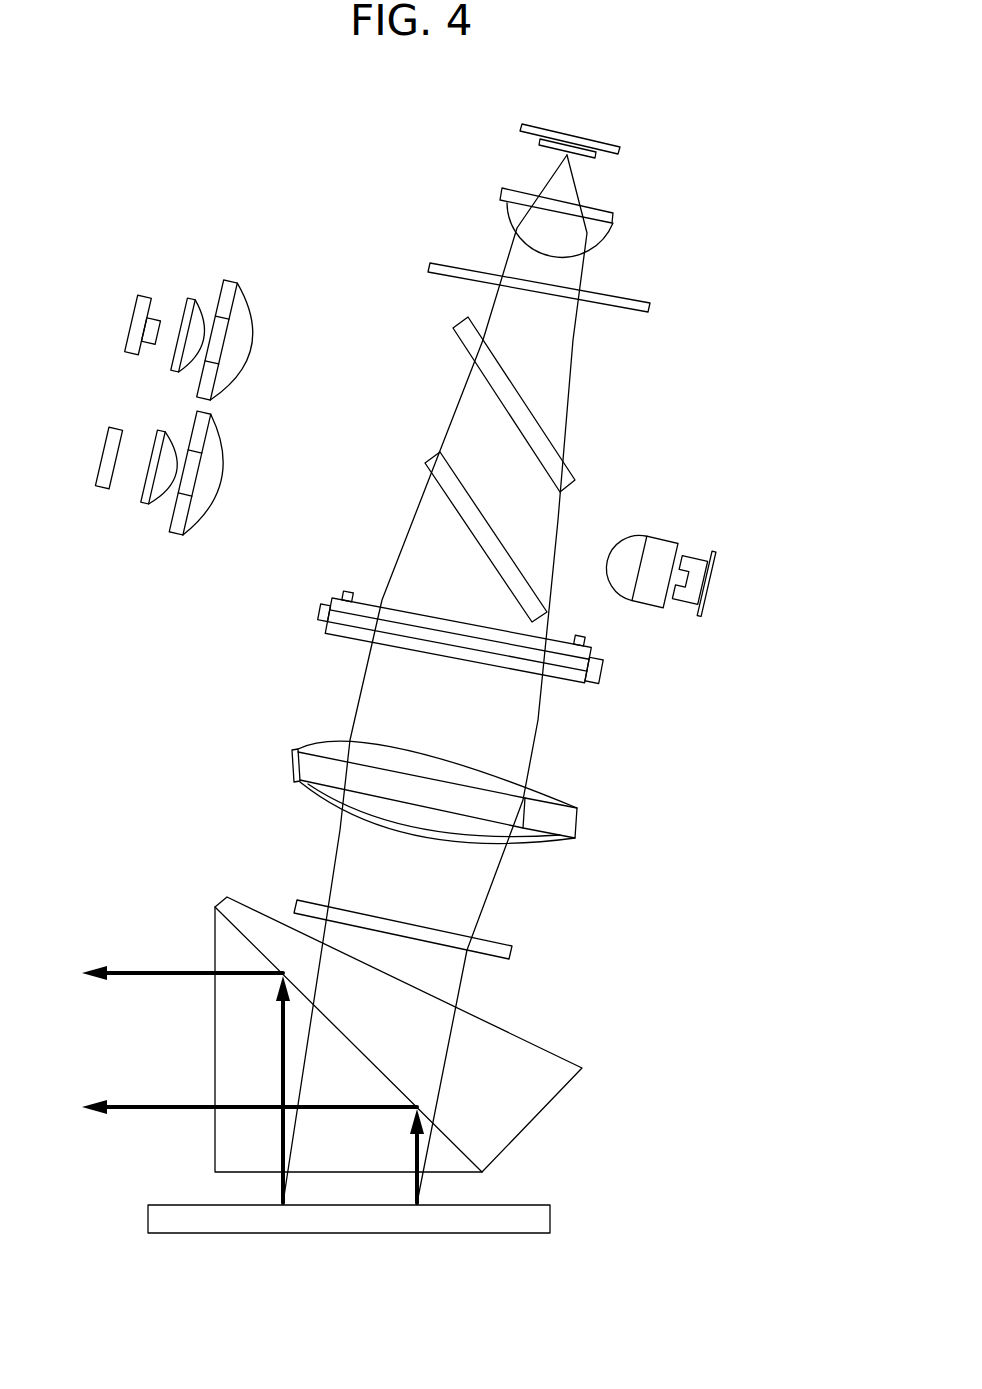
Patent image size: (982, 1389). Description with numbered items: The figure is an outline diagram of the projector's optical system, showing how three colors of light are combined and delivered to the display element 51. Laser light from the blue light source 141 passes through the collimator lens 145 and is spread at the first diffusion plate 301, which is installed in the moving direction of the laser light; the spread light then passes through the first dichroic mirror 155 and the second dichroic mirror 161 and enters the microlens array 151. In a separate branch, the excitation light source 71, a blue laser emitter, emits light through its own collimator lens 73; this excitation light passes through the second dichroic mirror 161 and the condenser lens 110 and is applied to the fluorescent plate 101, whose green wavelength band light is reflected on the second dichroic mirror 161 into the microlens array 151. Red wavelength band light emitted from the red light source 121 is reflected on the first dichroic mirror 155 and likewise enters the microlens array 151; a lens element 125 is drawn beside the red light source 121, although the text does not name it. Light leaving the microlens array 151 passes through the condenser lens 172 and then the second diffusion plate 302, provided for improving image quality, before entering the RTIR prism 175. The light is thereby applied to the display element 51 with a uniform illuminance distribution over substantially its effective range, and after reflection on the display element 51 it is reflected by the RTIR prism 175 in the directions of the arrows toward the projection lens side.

The blue light source 141 is at (622, 148).
The collimator lens 145 is at (615, 218).
The first diffusion plate 301 is at (650, 309).
The first dichroic mirror 155 is at (547, 427).
The second dichroic mirror 161 is at (452, 500).
The microlens array 151 is at (608, 665).
The collimator lens 73 is at (660, 538).
The excitation light source 71 is at (697, 555).
The condenser lens 172 is at (577, 822).
The second diffusion plate 302 is at (514, 953).
The RTIR prism 175 is at (550, 1052).
The display element 51 is at (552, 1220).
The red light source 121 is at (145, 290).
The lens 125 is at (232, 278).
The fluorescent plate 101 is at (102, 490).
The condenser lens 110 is at (178, 537).